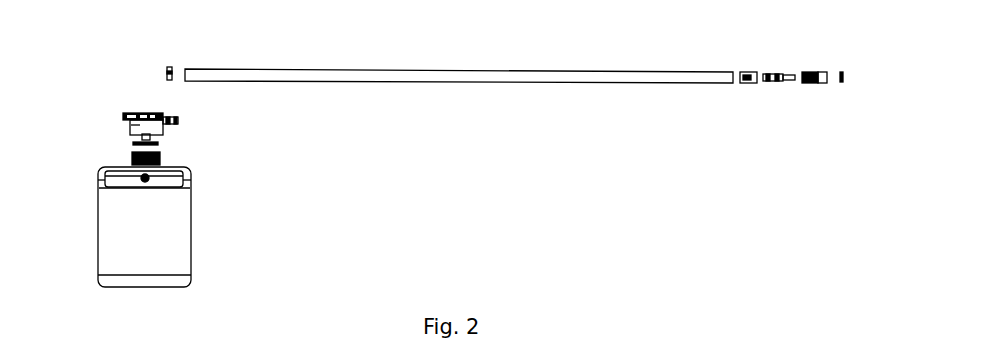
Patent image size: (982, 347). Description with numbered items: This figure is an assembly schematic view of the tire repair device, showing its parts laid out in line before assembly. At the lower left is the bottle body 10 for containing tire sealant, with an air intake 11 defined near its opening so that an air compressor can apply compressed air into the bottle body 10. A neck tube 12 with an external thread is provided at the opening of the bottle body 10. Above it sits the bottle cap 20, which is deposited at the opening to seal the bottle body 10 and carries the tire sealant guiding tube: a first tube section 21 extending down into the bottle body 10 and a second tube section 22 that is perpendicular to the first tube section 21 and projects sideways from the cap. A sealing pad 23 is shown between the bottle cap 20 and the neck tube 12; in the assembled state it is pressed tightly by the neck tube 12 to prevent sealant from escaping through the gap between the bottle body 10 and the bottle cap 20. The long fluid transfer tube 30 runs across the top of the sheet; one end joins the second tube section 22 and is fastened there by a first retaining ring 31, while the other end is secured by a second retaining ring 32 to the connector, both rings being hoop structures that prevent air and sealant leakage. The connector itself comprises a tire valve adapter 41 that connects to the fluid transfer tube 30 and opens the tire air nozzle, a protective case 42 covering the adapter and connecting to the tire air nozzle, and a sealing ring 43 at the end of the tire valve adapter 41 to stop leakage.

The bottle body 10 is at (108, 222).
The air intake 11 is at (148, 181).
The neck tube 12 is at (132, 158).
The bottle cap 20 is at (127, 122).
The first tube section 21 is at (150, 137).
The second tube section 22 is at (177, 118).
The sealing pad 23 is at (140, 145).
The fluid transfer tube 30 is at (347, 75).
The first retaining ring 31 is at (167, 68).
The second retaining ring 32 is at (745, 72).
The tire valve adapter 41 is at (780, 75).
The protective case 42 is at (810, 72).
The sealing ring 43 is at (840, 72).